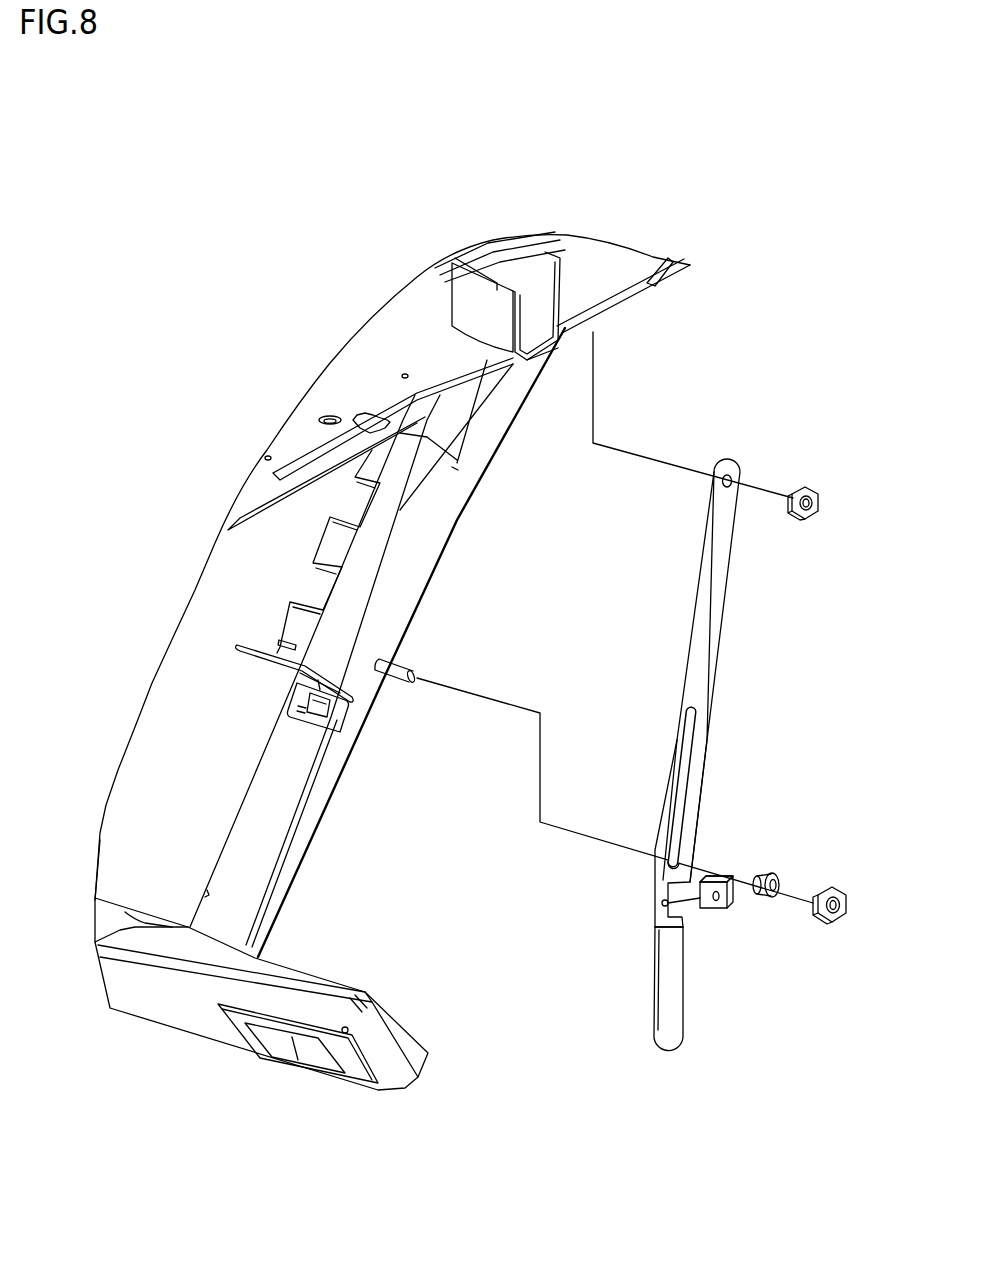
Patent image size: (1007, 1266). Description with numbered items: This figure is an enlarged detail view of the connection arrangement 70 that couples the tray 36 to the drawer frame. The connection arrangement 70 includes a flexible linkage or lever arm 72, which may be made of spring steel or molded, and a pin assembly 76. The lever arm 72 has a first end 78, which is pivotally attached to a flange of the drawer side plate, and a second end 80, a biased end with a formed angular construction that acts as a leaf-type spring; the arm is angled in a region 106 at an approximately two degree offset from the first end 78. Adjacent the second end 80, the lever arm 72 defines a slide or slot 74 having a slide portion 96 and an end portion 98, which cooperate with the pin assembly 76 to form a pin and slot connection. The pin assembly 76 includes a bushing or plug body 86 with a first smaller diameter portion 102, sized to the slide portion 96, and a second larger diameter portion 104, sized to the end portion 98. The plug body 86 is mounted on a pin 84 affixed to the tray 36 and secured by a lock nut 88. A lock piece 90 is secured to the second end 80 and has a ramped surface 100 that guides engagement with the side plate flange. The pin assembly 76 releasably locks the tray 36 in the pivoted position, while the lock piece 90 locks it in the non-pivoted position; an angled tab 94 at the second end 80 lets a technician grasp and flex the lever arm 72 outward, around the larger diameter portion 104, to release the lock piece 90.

The tray 36 is at (392, 661).
The connection arrangement 70 is at (743, 292).
The lever arm 72 is at (700, 661).
The slot 74 is at (697, 755).
The pin assembly 76 is at (833, 953).
The first end 78 is at (675, 513).
The second end 80 is at (623, 960).
The pin 84 is at (403, 673).
The plug body 86 is at (797, 857).
The lock nut 88 is at (833, 887).
The lock piece 90 is at (719, 910).
The angled tab 94 is at (667, 1007).
The slide portion 96 is at (695, 790).
The end portion 98 is at (666, 868).
The ramped surface 100 is at (703, 878).
The first smaller diameter portion 102 is at (757, 897).
The second larger diameter portion 104 is at (773, 898).
The region 106 is at (692, 650).